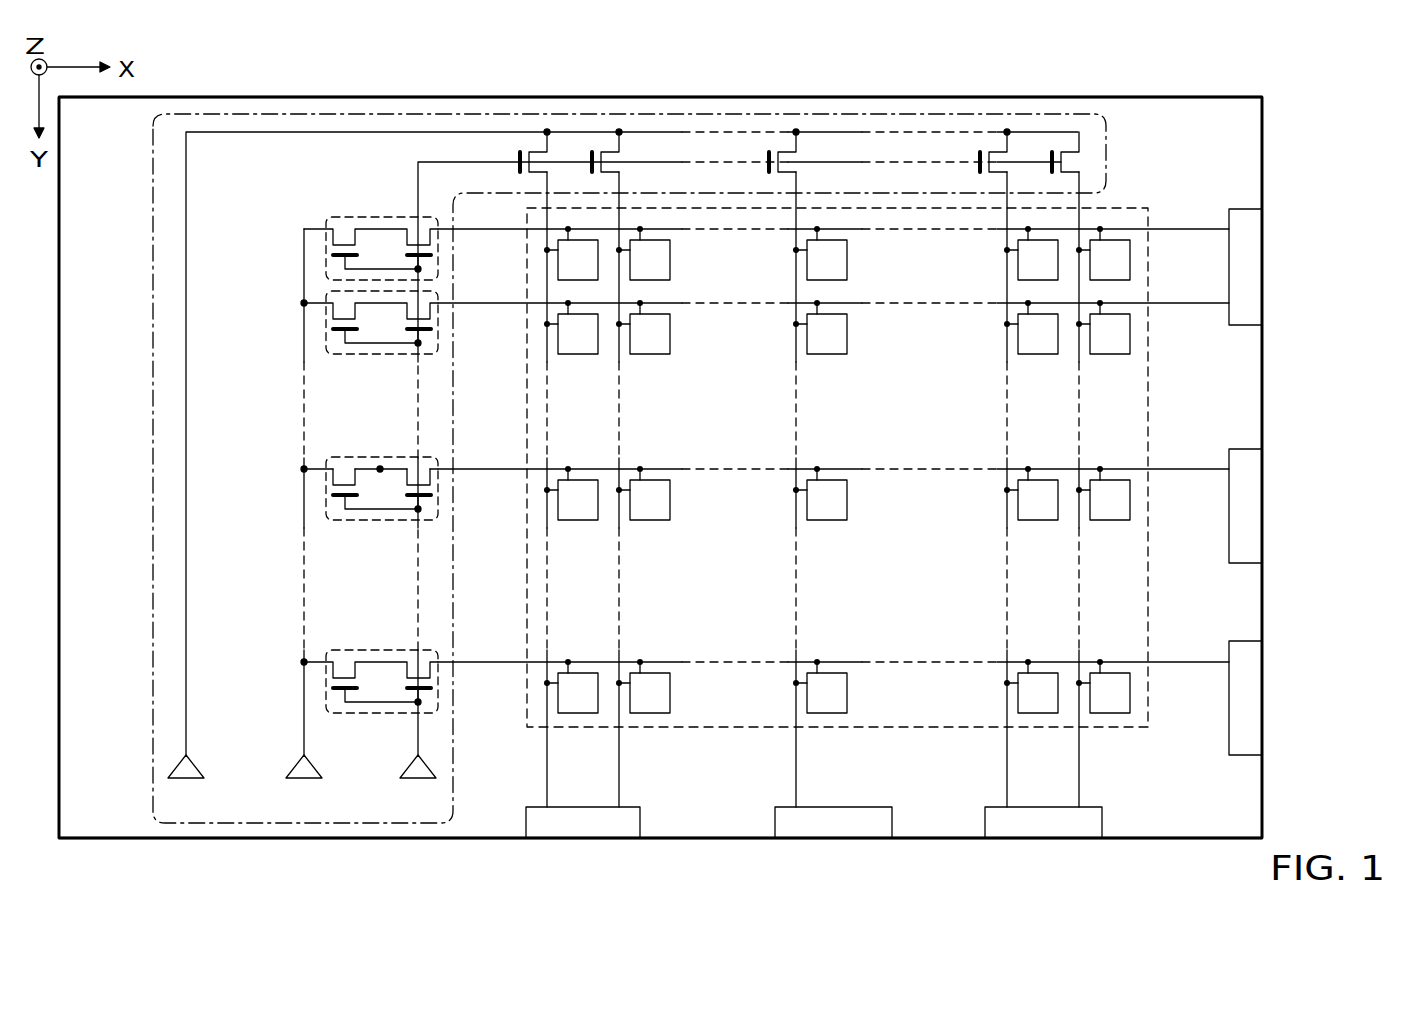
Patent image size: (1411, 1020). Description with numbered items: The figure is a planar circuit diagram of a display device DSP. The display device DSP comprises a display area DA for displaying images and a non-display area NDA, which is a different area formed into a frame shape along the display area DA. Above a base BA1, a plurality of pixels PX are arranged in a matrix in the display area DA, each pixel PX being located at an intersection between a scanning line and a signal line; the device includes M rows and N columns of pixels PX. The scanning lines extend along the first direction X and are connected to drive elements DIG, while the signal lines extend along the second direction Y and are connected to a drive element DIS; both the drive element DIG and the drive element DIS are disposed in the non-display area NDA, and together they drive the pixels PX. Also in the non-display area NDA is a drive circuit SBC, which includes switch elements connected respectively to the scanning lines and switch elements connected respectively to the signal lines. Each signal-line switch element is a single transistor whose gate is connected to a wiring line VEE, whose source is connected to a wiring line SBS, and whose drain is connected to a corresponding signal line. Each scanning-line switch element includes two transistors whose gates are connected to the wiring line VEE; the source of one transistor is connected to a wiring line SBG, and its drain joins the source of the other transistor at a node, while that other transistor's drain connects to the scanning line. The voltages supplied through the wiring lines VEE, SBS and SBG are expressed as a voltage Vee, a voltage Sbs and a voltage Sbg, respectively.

The display device DSP is at (1212, 64).
The base BA1 is at (1264, 145).
The non-display area NDA is at (108, 838).
The display area DA is at (1122, 208).
The drive circuit SBC is at (152, 192).
The wiring line SBS is at (186, 663).
The wiring line SBG is at (304, 738).
The wiring line VEE is at (418, 738).
The voltage Sbs is at (187, 785).
The voltage Sbg is at (305, 785).
The voltage Vee is at (419, 785).
The drive element DIG is at (1252, 270).
The drive element DIS is at (581, 838).
The pixel PX is at (848, 499).